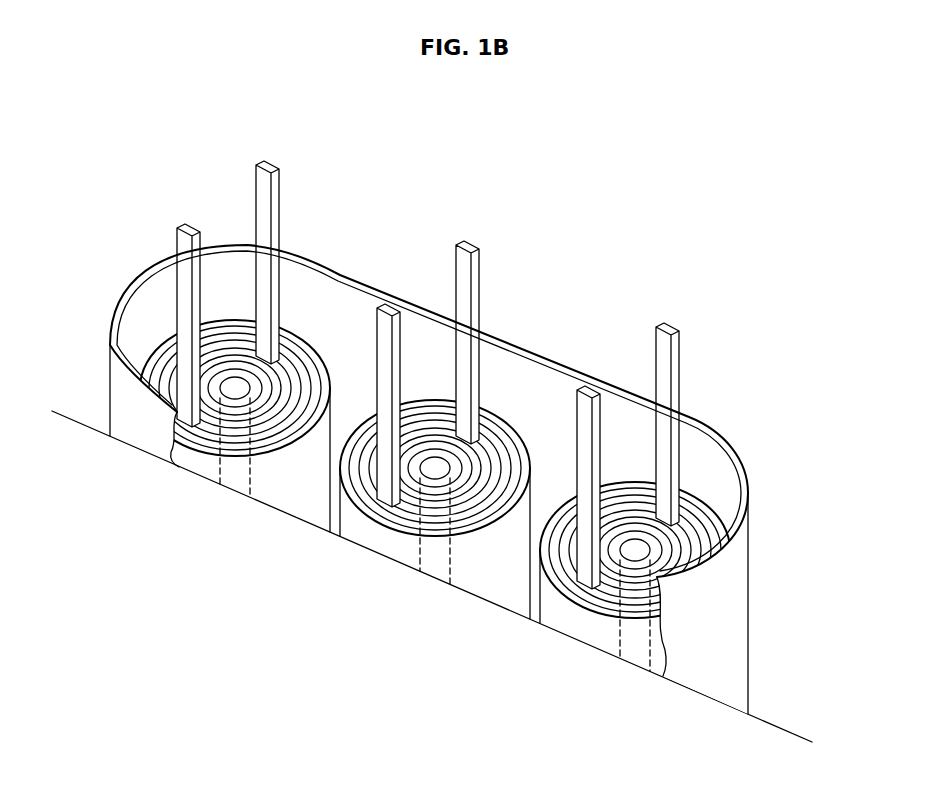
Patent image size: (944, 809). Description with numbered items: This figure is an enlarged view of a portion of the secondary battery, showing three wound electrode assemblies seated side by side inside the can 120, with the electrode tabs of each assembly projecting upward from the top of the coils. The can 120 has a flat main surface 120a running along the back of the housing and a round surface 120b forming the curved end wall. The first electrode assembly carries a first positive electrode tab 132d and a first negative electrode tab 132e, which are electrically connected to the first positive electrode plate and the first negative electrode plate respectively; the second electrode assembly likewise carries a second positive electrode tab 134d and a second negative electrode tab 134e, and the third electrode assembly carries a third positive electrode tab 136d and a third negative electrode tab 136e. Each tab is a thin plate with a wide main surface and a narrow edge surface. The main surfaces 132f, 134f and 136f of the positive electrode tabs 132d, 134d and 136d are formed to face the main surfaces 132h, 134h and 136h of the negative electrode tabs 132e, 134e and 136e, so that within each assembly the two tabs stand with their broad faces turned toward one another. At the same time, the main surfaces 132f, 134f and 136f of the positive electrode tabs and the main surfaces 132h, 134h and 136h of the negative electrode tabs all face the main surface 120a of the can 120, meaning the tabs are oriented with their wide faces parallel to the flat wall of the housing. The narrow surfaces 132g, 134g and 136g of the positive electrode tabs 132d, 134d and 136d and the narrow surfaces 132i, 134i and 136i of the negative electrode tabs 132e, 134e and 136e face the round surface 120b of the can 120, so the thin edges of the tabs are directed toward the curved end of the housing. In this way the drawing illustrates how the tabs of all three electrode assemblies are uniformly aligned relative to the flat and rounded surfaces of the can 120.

The can 120 is at (465, 486).
The main surface of the can 120a is at (560, 360).
The round surface of the can 120b is at (747, 513).
The first positive electrode tab 132d is at (187, 227).
The first negative electrode tab 132e is at (269, 163).
The main surface of the first positive electrode tab 132f is at (183, 285).
The narrow surface of the first positive electrode tab 132g is at (197, 310).
The main surface of the first negative electrode tab 132h is at (262, 208).
The narrow surface of the first negative electrode tab 132i is at (280, 297).
The second positive electrode tab 134d is at (390, 310).
The second negative electrode tab 134e is at (470, 245).
The main surface of the second positive electrode tab 134f is at (382, 477).
The narrow surface of the second positive electrode tab 134g is at (401, 466).
The main surface of the second negative electrode tab 134h is at (463, 290).
The narrow surface of the second negative electrode tab 134i is at (480, 378).
The third positive electrode tab 136d is at (590, 388).
The third negative electrode tab 136e is at (670, 328).
The main surface of the third positive electrode tab 136f is at (582, 560).
The narrow surface of the third positive electrode tab 136g is at (600, 548).
The main surface of the third negative electrode tab 136h is at (668, 375).
The narrow surface of the third negative electrode tab 136i is at (678, 462).